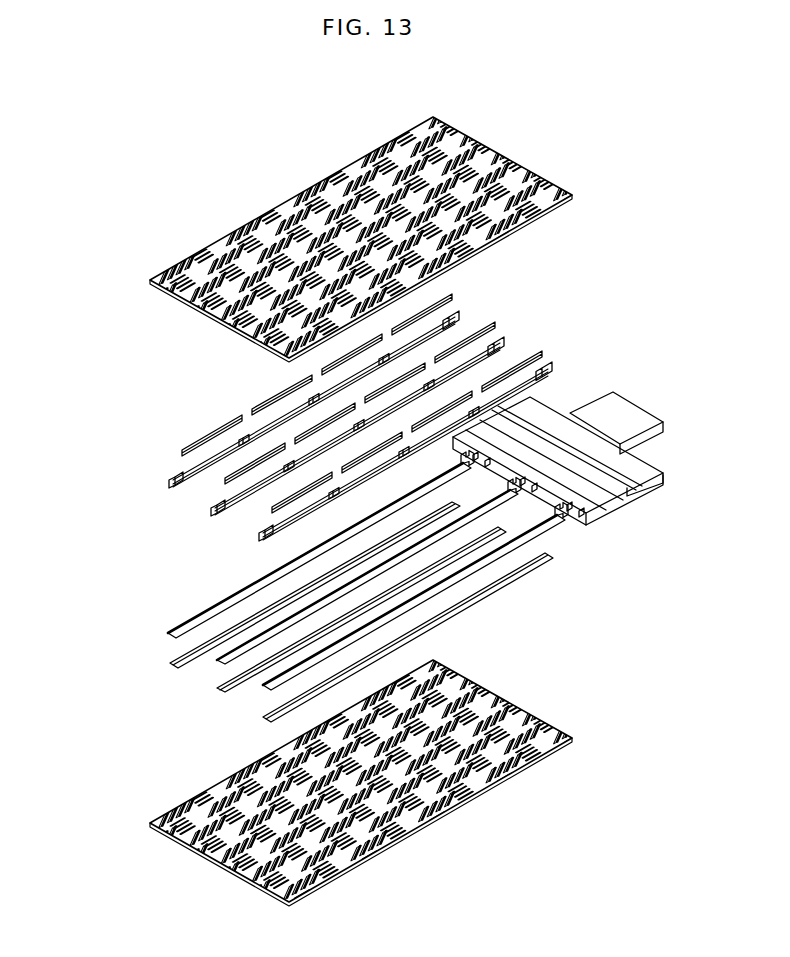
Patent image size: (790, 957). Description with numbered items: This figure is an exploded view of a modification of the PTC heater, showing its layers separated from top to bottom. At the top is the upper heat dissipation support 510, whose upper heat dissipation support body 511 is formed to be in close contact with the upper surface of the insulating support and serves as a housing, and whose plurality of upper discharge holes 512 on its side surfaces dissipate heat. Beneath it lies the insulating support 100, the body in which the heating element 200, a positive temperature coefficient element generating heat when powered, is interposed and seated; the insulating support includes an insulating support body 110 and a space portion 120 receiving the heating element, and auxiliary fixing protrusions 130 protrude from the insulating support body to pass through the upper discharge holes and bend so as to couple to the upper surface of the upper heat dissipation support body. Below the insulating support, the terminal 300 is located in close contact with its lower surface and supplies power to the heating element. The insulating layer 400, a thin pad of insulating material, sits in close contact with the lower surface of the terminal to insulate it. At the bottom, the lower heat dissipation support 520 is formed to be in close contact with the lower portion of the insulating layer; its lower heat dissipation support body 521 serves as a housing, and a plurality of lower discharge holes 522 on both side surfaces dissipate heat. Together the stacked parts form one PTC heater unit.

The insulating support 100 is at (305, 426).
The insulating support body 110 is at (172, 481).
The space portion 120 is at (181, 452).
The auxiliary fixing protrusion 130 is at (176, 487).
The heating element 200 is at (450, 296).
The terminal 300 is at (535, 535).
The insulating layer 400 is at (527, 573).
The upper heat dissipation support 510 is at (383, 238).
The upper heat dissipation support body 511 is at (553, 177).
The upper discharge holes 512 is at (573, 192).
The lower heat dissipation support 520 is at (369, 781).
The lower heat dissipation support body 521 is at (495, 700).
The lower discharge holes 522 is at (518, 703).